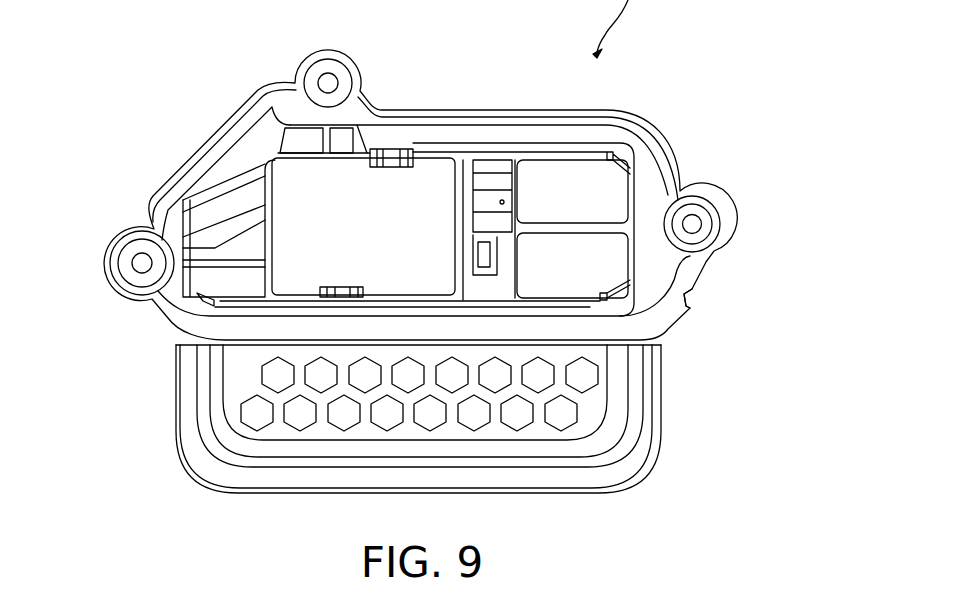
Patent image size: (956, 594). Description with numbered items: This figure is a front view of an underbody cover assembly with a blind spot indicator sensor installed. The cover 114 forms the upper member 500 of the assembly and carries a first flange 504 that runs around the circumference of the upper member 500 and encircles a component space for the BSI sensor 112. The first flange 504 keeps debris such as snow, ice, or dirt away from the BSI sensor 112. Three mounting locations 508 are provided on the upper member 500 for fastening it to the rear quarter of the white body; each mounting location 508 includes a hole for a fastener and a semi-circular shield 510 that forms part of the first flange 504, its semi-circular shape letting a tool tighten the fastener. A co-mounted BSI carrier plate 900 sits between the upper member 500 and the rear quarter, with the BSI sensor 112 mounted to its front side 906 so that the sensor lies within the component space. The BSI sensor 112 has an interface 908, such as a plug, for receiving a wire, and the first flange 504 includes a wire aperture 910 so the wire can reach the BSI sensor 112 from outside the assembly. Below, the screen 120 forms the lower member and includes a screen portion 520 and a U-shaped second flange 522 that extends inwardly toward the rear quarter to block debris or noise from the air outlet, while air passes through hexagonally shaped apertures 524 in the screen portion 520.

The upper member 500 is at (250, 93).
The first flange 504 is at (195, 143).
The mounting locations 508 is at (333, 73).
The semi-circular shield 510 is at (347, 73).
The BSI sensor 112 is at (404, 200).
The interface 908 is at (493, 183).
The BSI carrier plate 900 is at (570, 187).
The cover 114 is at (650, 170).
The front side 906 is at (587, 268).
The wire aperture 910 is at (688, 304).
The screen 120 is at (487, 441).
The second flange 522 is at (637, 442).
The apertures 524 is at (298, 420).
The screen portion 520 is at (537, 427).